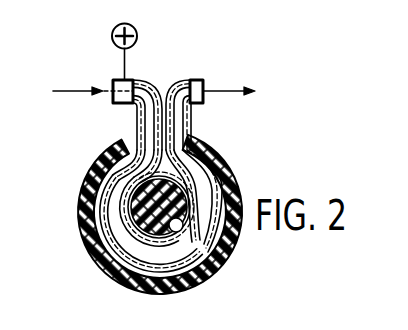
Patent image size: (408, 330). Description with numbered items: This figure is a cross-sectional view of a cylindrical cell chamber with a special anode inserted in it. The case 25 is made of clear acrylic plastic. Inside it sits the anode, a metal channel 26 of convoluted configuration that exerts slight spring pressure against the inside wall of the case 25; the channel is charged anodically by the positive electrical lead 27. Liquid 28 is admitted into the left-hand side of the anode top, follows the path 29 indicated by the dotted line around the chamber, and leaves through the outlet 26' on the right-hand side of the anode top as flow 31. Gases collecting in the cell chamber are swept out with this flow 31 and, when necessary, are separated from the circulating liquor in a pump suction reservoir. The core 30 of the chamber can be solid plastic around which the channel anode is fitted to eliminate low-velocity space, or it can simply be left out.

The case 25 is at (82, 231).
The metal channel anode 26 is at (165, 196).
The outlet 26' is at (204, 142).
The positive electrical lead 27 is at (124, 60).
The liquid 28 is at (72, 90).
The path 29 is at (100, 192).
The core 30 is at (178, 232).
The flow 31 is at (226, 90).